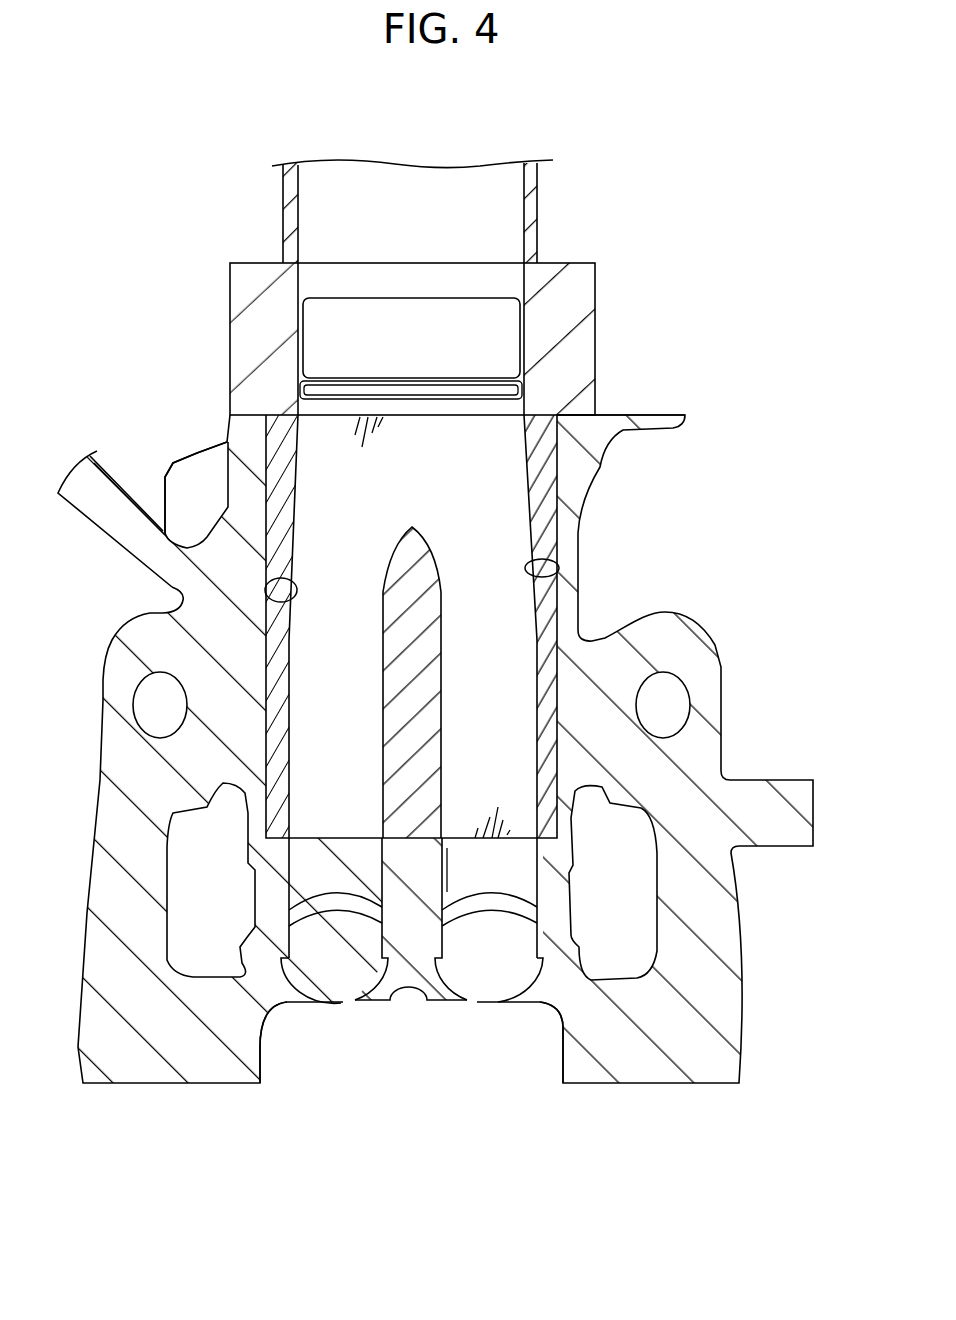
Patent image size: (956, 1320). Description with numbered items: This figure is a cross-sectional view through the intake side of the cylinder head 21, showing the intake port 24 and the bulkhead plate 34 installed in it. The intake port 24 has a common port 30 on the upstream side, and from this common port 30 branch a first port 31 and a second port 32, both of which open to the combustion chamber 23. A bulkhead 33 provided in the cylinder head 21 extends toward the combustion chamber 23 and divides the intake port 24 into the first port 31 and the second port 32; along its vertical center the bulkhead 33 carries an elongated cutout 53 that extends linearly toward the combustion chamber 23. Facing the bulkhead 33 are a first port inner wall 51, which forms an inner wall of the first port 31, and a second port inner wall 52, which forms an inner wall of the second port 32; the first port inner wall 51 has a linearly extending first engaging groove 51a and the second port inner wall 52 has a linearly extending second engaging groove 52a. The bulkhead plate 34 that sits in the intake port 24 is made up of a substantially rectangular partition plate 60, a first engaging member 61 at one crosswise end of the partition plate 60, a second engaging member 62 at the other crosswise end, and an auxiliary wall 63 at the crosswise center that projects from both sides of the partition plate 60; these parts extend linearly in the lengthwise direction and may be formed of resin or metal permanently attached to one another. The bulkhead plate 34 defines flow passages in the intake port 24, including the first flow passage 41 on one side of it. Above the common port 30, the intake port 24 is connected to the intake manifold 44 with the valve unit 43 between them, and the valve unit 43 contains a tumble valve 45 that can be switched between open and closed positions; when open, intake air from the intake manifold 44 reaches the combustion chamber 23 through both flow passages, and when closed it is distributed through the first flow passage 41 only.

The cylinder head 21 is at (167, 463).
The combustion chamber 23 is at (355, 1055).
The intake port 24 is at (298, 460).
The common port 30 is at (425, 463).
The first port 31 is at (505, 732).
The second port 32 is at (345, 732).
The bulkhead 33 is at (412, 958).
The bulkhead plate 34 is at (560, 537).
The first flow passage 41 is at (360, 548).
The valve unit 43 is at (235, 293).
The intake manifold 44 is at (345, 180).
The tumble valve 45 is at (410, 313).
The first port inner wall 51 is at (535, 872).
The first engaging groove 51a is at (560, 573).
The second port inner wall 52 is at (290, 866).
The second engaging groove 52a is at (290, 601).
The cutout 53 is at (398, 837).
The partition plate 60 is at (510, 513).
The first engaging member 61 is at (540, 658).
The second engaging member 62 is at (272, 658).
The auxiliary wall 63 is at (417, 553).